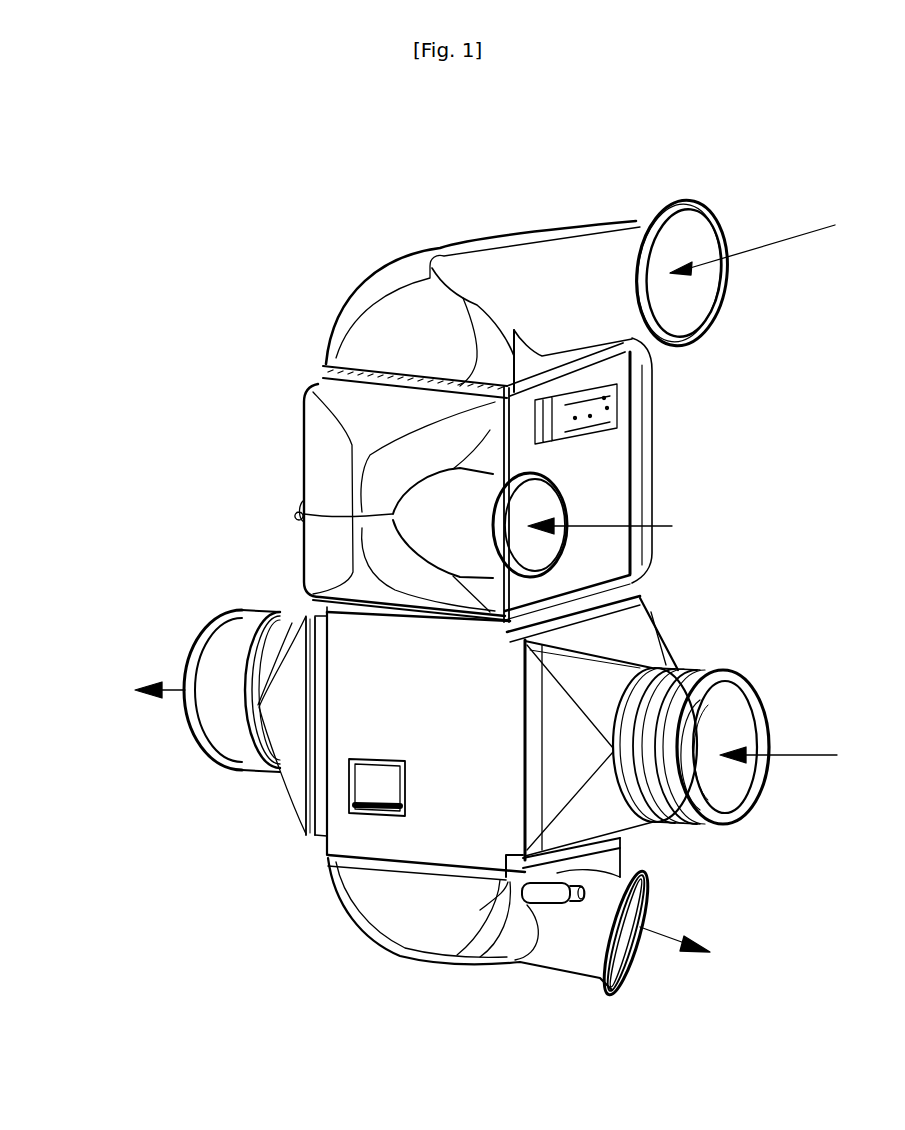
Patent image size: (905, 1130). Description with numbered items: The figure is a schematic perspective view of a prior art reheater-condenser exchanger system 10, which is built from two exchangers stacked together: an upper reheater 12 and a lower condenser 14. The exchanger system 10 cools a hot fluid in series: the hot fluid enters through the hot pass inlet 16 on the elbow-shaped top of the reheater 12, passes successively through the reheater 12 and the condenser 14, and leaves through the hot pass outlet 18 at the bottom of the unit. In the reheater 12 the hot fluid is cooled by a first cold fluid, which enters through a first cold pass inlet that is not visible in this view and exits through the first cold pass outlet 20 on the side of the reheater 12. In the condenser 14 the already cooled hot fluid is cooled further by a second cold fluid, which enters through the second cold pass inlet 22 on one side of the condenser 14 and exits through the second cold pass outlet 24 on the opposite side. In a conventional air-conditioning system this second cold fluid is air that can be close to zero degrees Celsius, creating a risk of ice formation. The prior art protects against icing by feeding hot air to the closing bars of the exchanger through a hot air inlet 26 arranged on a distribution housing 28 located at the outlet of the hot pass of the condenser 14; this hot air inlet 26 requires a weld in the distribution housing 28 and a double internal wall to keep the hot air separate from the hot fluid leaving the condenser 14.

The reheater-condenser exchanger system 10 is at (232, 226).
The reheater 12 is at (113, 375).
The condenser 14 is at (113, 606).
The hot pass inlet 16 is at (597, 248).
The hot pass outlet 18 is at (581, 947).
The first cold pass outlet 20 is at (620, 416).
The second cold pass inlet 22 is at (743, 675).
The second cold pass outlet 24 is at (243, 775).
The hot air inlet 26 is at (553, 895).
The distribution housing 28 is at (418, 912).